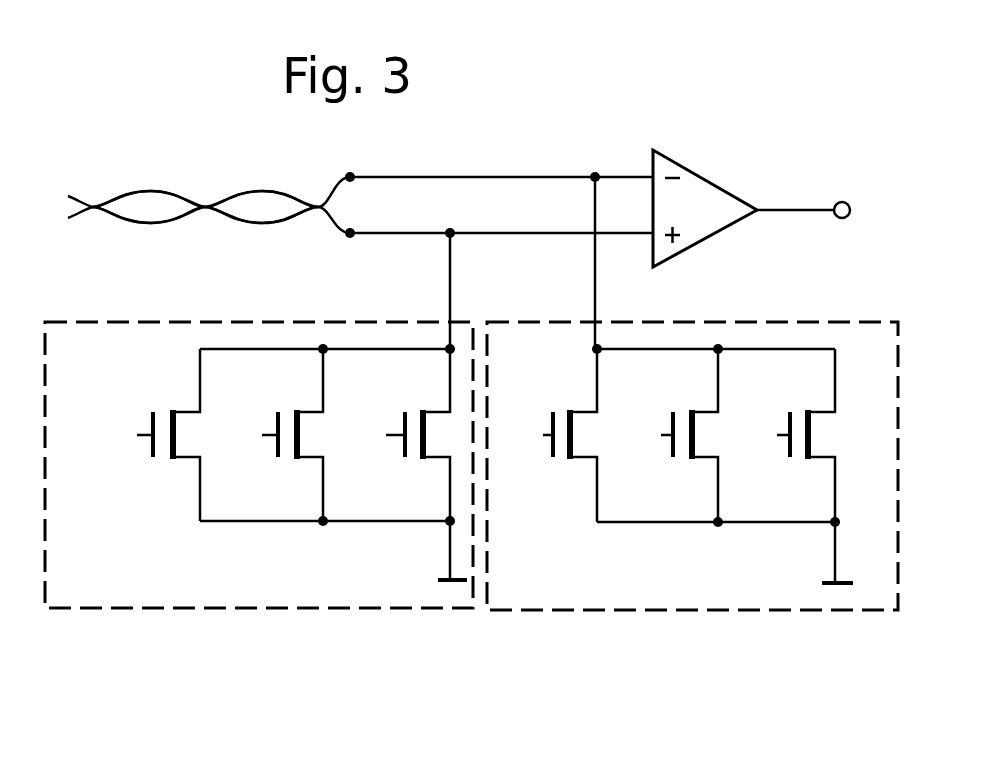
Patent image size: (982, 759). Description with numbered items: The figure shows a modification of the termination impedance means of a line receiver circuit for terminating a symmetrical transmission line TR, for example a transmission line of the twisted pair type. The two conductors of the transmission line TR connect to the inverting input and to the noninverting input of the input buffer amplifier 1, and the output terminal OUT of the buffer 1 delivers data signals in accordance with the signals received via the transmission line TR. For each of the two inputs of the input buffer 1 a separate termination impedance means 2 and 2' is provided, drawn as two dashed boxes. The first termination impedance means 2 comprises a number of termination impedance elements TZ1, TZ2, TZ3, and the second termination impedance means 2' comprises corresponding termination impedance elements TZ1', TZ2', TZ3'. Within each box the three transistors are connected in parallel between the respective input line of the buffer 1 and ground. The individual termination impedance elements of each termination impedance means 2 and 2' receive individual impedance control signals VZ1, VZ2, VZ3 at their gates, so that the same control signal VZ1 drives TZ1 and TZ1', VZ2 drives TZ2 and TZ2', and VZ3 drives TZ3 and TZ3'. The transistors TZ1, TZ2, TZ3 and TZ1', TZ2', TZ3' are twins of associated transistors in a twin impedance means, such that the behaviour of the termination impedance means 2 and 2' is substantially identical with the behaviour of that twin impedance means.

The input buffer amplifier 1 is at (718, 178).
The termination impedance means 2 is at (259, 498).
The termination impedance means 2' is at (692, 499).
The transmission line TR is at (178, 205).
The output terminal OUT is at (845, 218).
The termination impedance element TZ1 is at (169, 435).
The termination impedance element TZ2 is at (291, 435).
The termination impedance element TZ3 is at (416, 435).
The termination impedance element TZ1' is at (567, 435).
The termination impedance element TZ2' is at (684, 435).
The termination impedance element TZ3' is at (798, 435).
The impedance control signal VZ1 is at (322, 436).
The impedance control signal VZ2 is at (444, 436).
The impedance control signal VZ3 is at (564, 436).